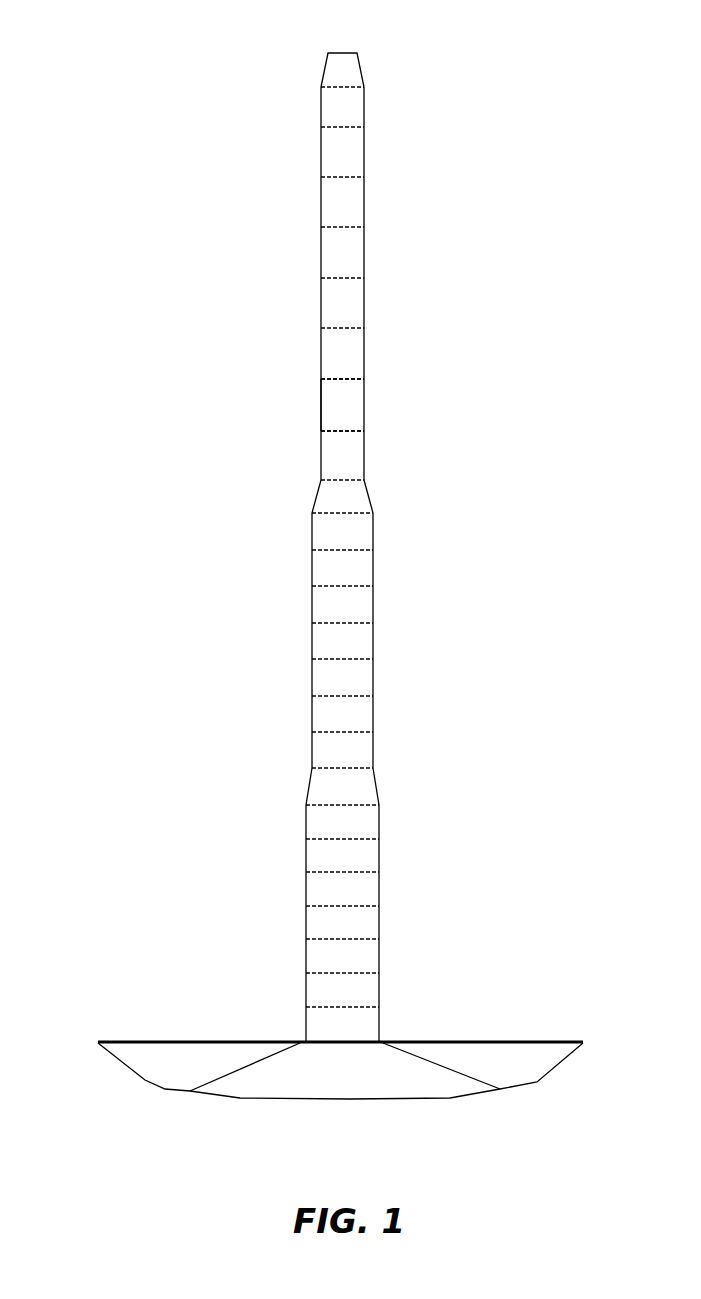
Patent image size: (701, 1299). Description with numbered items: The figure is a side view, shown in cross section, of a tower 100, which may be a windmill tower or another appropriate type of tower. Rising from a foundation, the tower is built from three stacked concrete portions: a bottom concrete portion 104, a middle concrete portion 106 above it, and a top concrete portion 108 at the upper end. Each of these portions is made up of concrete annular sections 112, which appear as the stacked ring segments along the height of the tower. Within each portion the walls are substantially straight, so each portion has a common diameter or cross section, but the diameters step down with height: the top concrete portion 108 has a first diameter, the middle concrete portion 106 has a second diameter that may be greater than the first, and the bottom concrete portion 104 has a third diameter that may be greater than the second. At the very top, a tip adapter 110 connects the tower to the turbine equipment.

The tower 100 is at (130, 72).
The bottom concrete portion 104 is at (278, 955).
The middle concrete portion 106 is at (283, 673).
The top concrete portion 108 is at (291, 322).
The tip adapter 110 is at (327, 72).
The concrete annular sections 112 is at (327, 398).